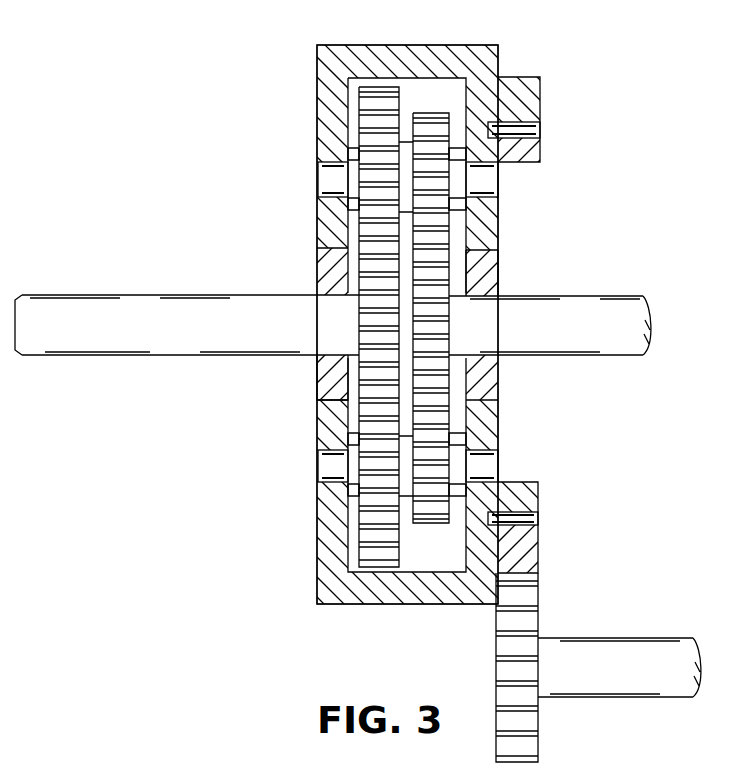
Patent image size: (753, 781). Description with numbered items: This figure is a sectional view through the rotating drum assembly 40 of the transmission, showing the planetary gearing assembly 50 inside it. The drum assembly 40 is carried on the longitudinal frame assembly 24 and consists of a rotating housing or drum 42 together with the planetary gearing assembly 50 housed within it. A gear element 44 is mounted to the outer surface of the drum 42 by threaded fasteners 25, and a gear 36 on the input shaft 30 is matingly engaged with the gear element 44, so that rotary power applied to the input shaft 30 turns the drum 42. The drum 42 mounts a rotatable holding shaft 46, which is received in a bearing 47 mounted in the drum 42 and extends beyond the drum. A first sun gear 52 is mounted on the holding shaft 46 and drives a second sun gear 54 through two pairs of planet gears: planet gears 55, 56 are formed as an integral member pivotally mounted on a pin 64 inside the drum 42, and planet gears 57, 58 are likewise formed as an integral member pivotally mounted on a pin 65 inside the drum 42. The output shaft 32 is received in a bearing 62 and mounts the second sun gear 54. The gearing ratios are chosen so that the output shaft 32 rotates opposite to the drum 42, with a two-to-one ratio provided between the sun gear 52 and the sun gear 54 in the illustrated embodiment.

The longitudinal frame assembly 24 is at (435, 358).
The threaded fasteners 25 is at (540, 130).
The input shaft 30 is at (623, 657).
The output shaft 32 is at (143, 337).
The gear 36 is at (500, 668).
The rotating drum assembly 40 is at (222, 157).
The rotating housing or drum 42 is at (327, 68).
The gear element 44 is at (540, 150).
The holding shaft 46 is at (573, 305).
The bearing 47 is at (497, 280).
The planetary gearing assembly 50 is at (422, 100).
The first sun gear 52 is at (437, 272).
The second sun gear 54 is at (320, 327).
The planet gear 55 is at (432, 508).
The planet gear 56 is at (382, 547).
The planet gear 57 is at (437, 122).
The planet gear 58 is at (379, 95).
The bearing 62 is at (316, 373).
The pin 64 is at (320, 468).
The pin 65 is at (320, 175).